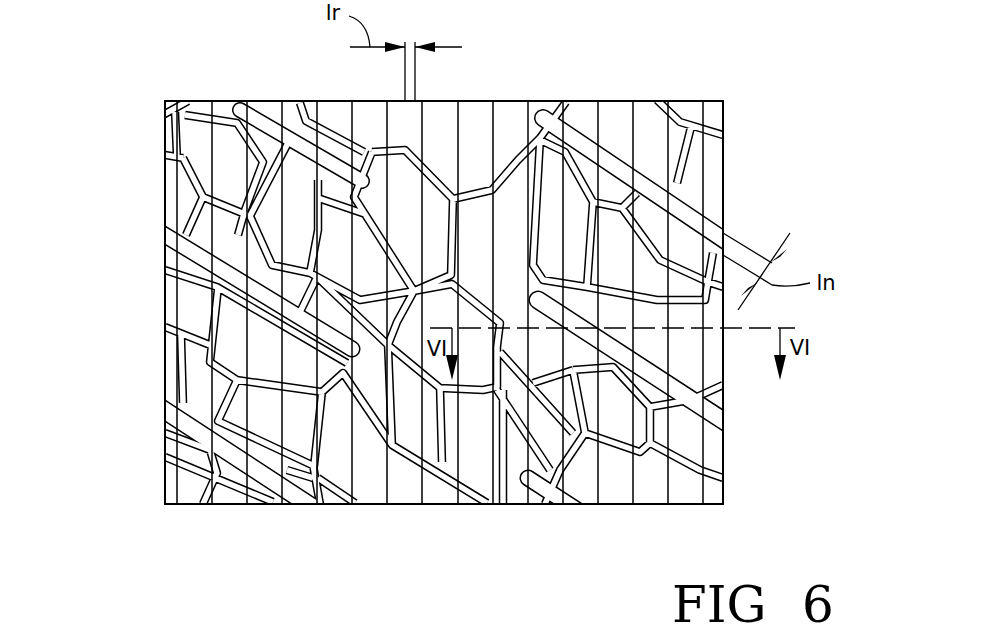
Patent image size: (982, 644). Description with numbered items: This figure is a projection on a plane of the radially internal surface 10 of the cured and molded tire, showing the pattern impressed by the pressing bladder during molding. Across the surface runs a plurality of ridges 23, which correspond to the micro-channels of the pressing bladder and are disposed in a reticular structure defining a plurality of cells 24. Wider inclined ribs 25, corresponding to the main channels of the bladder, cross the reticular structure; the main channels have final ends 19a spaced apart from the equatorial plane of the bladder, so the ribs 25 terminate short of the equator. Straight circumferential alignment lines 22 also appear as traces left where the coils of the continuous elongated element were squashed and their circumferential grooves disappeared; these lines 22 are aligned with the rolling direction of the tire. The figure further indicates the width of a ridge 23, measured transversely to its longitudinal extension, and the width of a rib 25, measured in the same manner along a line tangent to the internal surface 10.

The radially internal surface 10 is at (553, 160).
The final ends 19a is at (372, 177).
The circumferential alignment lines 22 is at (280, 233).
The ridges 23 is at (427, 178).
The cells 24 is at (512, 311).
The ribs 25 is at (262, 103).